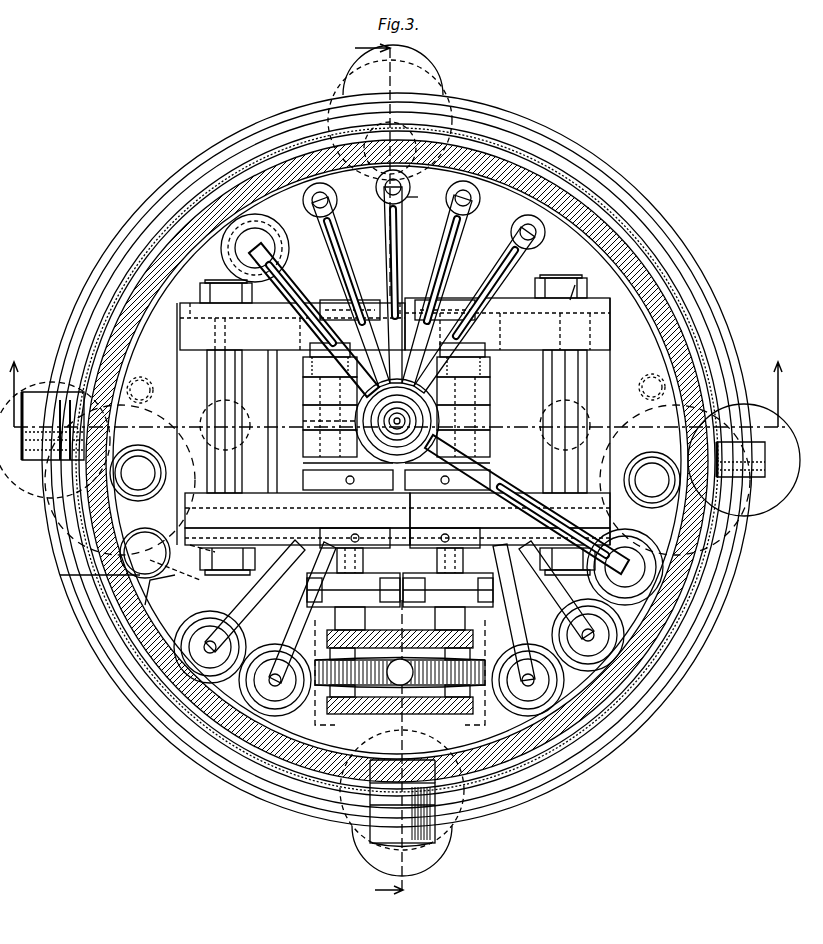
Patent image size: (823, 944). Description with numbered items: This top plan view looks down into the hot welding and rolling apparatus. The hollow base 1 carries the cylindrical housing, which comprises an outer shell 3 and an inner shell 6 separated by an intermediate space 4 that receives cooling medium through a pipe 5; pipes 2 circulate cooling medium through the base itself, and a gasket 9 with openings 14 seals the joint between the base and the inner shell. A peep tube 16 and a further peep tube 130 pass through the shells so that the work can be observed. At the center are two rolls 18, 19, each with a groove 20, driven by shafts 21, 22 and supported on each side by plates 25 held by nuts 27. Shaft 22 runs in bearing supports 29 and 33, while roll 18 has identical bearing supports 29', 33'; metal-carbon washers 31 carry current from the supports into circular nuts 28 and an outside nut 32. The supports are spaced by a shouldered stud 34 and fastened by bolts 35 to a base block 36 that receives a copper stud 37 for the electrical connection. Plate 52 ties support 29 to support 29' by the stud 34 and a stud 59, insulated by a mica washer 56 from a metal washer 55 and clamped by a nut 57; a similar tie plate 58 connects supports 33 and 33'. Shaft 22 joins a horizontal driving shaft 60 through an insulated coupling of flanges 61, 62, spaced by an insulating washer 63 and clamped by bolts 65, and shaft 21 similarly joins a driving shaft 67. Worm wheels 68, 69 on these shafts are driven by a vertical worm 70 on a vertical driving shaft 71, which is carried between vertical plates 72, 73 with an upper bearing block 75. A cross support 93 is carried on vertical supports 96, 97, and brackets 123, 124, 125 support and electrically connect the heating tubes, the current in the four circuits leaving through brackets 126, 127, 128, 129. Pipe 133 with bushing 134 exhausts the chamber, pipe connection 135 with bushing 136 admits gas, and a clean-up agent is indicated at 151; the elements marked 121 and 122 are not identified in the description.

The hollow base 1 is at (397, 385).
The pipe 2 is at (638, 395).
The outer shell 3 is at (590, 182).
The intermediate space 4 is at (185, 200).
The pipe 5 is at (756, 500).
The inner shell 6 is at (630, 215).
The gasket 9 is at (244, 790).
The openings 14 is at (328, 250).
The peep tube 16 is at (40, 440).
The roll 18 is at (329, 433).
The roll 19 is at (405, 421).
The groove 20 is at (303, 418).
The shaft 21 is at (303, 444).
The shaft 22 is at (480, 398).
The plate 25 is at (303, 370).
The nut 27 is at (310, 350).
The circular nut 28 is at (303, 474).
The bearing support 29 is at (510, 519).
The bearing support 29' is at (297, 519).
The washer 31 is at (470, 360).
The outside nut 32 is at (462, 290).
The bearing 33 is at (507, 421).
The bearing support 33' is at (291, 424).
The shouldered stud 34 is at (565, 362).
The bolt 35 is at (577, 283).
The base block 36 is at (205, 372).
The copper stud 37 is at (612, 433).
The plate 52 is at (275, 535).
The metal washer 55 is at (200, 560).
The mica washer 56 is at (540, 556).
The nut 57 is at (222, 572).
The tie plate 58 is at (198, 302).
The stud 59 is at (210, 430).
The horizontal driving shaft 60 is at (470, 612).
The flange 61 is at (408, 590).
The flange 62 is at (409, 640).
The insulating washer 63 is at (490, 592).
The bolt 65 is at (400, 639).
The horizontal driving shaft 67 is at (400, 659).
The worm wheel 68 is at (460, 712).
The worm wheel 69 is at (318, 712).
The worm 70 is at (395, 690).
The vertical driving shaft 71 is at (410, 705).
The vertical plate 72 is at (440, 710).
The vertical plate 73 is at (485, 638).
The bearing block 75 is at (365, 720).
The cross support 93 is at (305, 298).
The vertical support 96 is at (262, 240).
The vertical support 97 is at (625, 567).
The lever 121 is at (405, 185).
The lever 122 is at (428, 196).
The bracket 123 is at (372, 228).
The bracket 124 is at (478, 212).
The bracket 125 is at (548, 248).
The bracket 126 is at (235, 642).
The bracket 127 is at (302, 630).
The bracket 128 is at (522, 700).
The bracket 129 is at (575, 627).
The peep tube 130 is at (440, 843).
The pipe 133 is at (650, 520).
The bushing 134 is at (640, 465).
The pipe connection 135 is at (160, 530).
The bushing 136 is at (140, 445).
The clean-up agent receptacle 151 is at (79, 576).